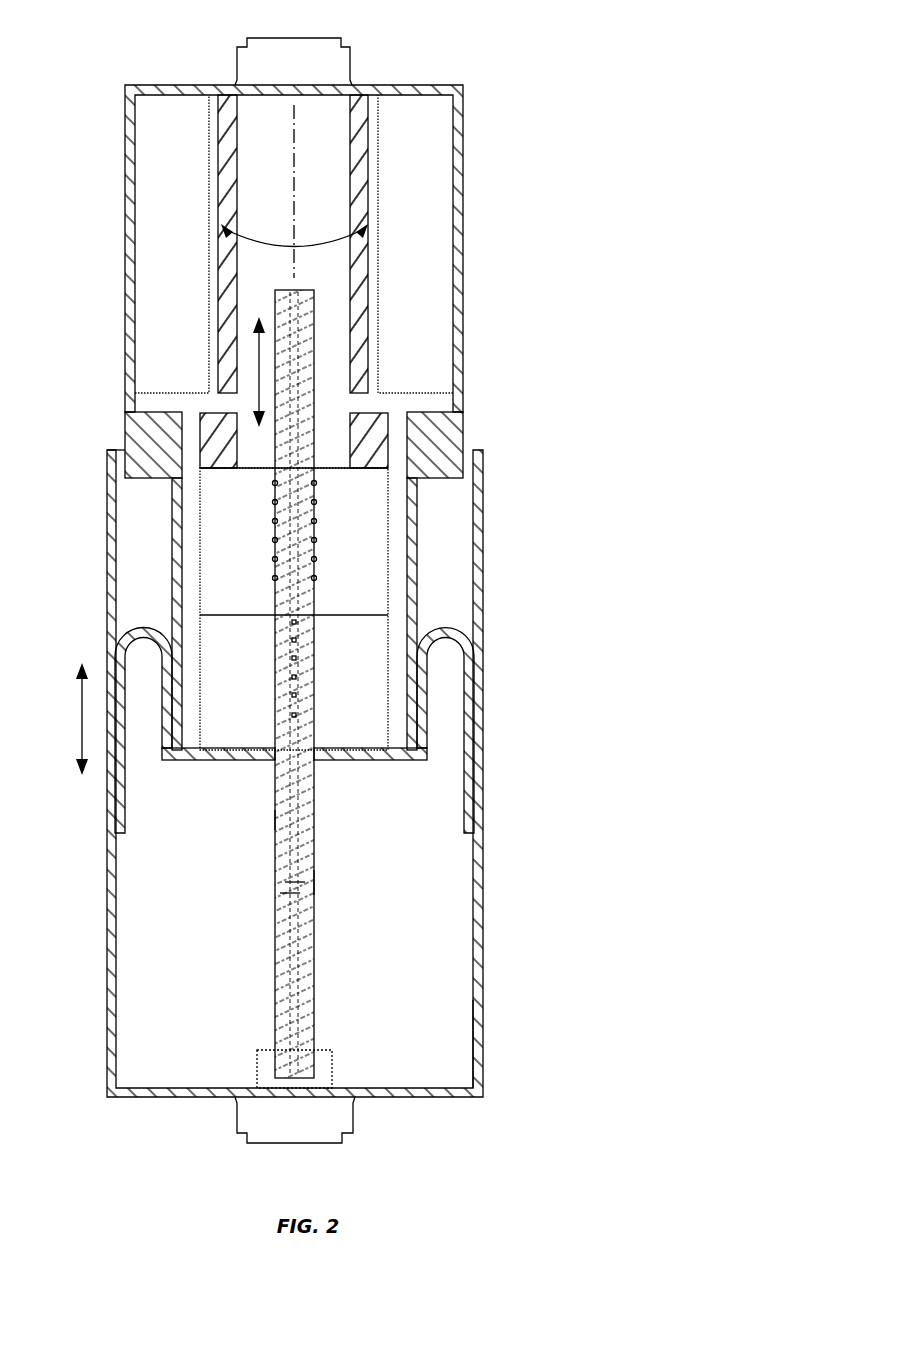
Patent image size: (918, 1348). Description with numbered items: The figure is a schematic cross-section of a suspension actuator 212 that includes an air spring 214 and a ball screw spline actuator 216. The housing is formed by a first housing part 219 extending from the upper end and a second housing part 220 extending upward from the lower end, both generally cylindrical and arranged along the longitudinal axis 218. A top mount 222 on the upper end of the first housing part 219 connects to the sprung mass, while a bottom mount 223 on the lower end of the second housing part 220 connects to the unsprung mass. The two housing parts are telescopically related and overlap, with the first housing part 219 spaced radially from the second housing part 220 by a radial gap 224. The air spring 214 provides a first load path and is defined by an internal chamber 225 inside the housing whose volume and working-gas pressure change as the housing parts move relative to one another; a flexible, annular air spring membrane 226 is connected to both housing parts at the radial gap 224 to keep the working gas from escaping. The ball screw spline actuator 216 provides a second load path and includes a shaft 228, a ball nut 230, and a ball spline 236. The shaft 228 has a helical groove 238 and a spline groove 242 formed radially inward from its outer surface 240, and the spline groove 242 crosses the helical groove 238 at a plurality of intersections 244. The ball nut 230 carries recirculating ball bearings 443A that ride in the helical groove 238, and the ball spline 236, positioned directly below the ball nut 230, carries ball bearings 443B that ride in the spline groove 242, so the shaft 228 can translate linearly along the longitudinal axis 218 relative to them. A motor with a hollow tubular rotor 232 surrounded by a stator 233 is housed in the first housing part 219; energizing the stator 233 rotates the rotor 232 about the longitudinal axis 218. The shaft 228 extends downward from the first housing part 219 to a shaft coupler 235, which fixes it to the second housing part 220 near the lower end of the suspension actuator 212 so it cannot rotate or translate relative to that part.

The suspension actuator 212 is at (510, 72).
The air spring 214 is at (495, 626).
The ball screw spline actuator 216 is at (385, 609).
The longitudinal axis 218 is at (294, 188).
The first housing part 219 is at (465, 265).
The second housing part 220 is at (482, 1047).
The top mount 222 is at (353, 55).
The bottom mount 223 is at (327, 1147).
The radial gap 224 is at (460, 594).
The internal chamber 225 is at (450, 862).
The air spring membrane 226 is at (468, 692).
The shaft 228 is at (292, 684).
The ball nut 230 is at (218, 548).
The rotor 232 is at (365, 202).
The stator 233 is at (447, 143).
The shaft coupler 235 is at (333, 1065).
The ball spline 236 is at (218, 683).
The helical groove 238 is at (305, 883).
The outer surface 240 is at (282, 820).
The spline groove 242 is at (290, 893).
The intersections 244 is at (293, 882).
The ball bearing 443A is at (314, 582).
The ball bearing 443B is at (294, 695).